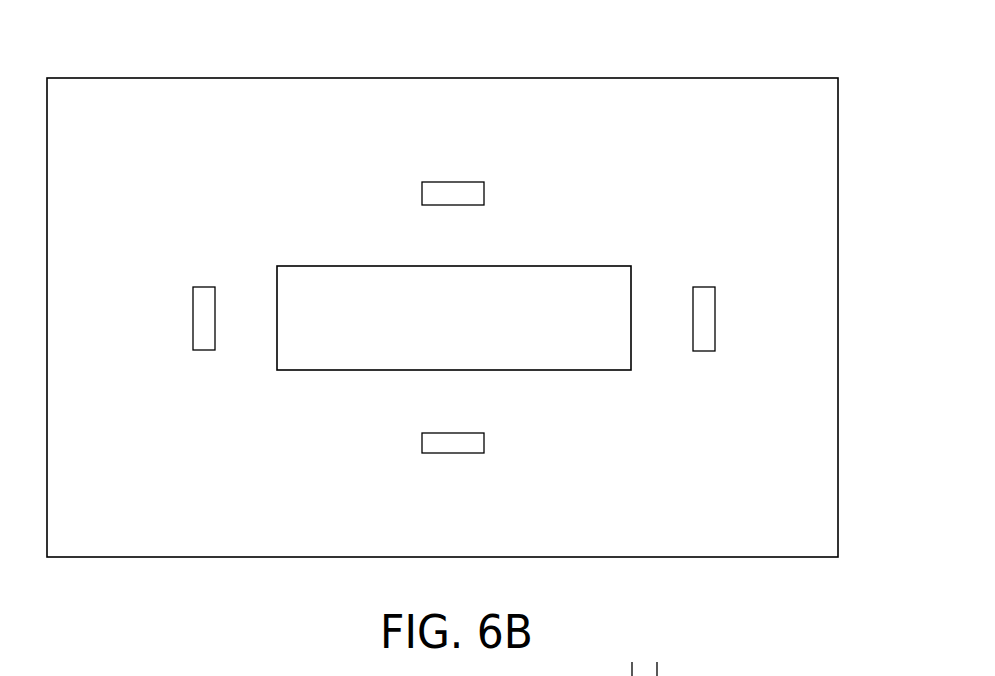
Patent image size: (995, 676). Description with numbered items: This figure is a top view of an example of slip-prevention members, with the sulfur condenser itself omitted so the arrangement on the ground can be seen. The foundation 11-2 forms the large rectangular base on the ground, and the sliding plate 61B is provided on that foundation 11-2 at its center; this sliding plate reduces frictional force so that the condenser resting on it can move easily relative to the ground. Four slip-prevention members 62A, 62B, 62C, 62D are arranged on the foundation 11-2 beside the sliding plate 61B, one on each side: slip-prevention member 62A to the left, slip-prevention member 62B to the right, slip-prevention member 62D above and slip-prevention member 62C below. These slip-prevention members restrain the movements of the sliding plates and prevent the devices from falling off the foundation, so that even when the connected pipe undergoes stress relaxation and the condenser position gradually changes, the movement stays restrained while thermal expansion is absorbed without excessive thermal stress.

The foundation 11-2 is at (660, 133).
The sliding plate 61B is at (318, 278).
The slip-prevention member 62A is at (193, 313).
The slip-prevention member 62B is at (716, 318).
The slip-prevention member 62C is at (455, 453).
The slip-prevention member 62D is at (455, 182).